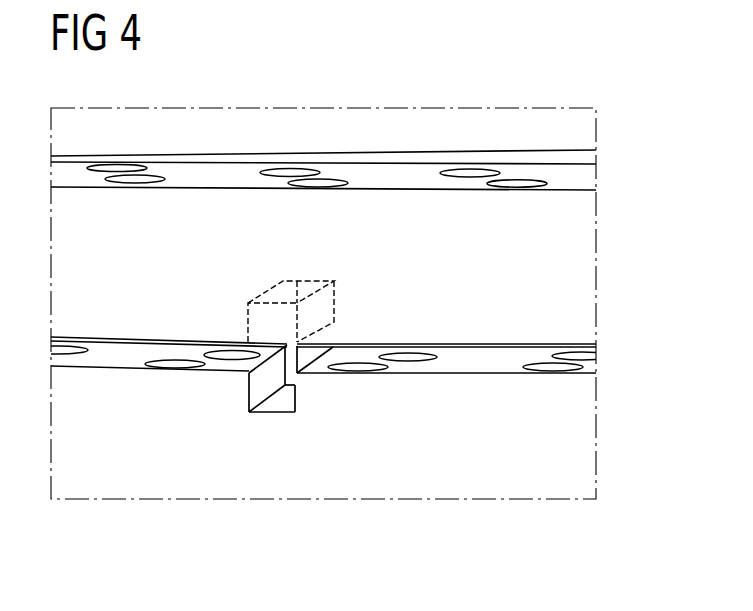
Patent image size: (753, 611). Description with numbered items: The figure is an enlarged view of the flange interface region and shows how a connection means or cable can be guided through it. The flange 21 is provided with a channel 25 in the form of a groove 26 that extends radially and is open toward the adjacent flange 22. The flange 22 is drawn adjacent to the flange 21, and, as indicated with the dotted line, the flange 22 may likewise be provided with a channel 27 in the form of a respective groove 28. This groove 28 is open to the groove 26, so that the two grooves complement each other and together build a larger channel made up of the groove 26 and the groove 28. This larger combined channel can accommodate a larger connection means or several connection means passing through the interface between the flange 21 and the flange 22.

The flange 21 is at (577, 446).
The flange 22 is at (577, 283).
The channel 25 is at (258, 428).
The groove 26 is at (285, 403).
The channel 27 is at (318, 268).
The groove 28 is at (297, 281).